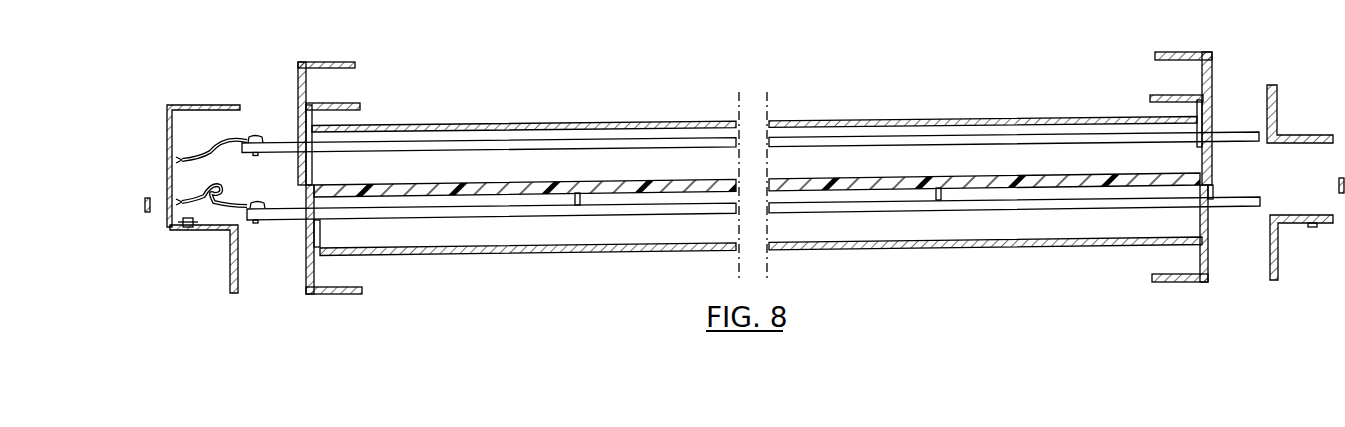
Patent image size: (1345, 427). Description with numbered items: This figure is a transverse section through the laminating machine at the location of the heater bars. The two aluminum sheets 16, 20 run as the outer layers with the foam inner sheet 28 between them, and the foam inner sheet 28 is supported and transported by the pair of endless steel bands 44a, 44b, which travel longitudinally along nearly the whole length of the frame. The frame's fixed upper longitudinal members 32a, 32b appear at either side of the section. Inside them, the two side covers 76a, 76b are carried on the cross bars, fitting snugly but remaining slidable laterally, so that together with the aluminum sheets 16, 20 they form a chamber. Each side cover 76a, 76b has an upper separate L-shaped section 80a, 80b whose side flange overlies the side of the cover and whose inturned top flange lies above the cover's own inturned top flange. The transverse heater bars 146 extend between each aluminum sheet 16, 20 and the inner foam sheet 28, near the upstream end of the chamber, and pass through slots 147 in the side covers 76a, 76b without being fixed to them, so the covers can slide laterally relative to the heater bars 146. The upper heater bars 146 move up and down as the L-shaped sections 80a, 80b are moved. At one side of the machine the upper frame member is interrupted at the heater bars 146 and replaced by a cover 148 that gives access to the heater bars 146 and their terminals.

The aluminum sheet 16 is at (523, 252).
The aluminum sheet 20 is at (468, 126).
The foam inner sheet 28 is at (512, 188).
The upper longitudinal member 32a is at (204, 259).
The upper longitudinal member 32b is at (1280, 253).
The endless steel band 44a is at (148, 213).
The endless steel band 44b is at (1339, 184).
The side cover 76a is at (290, 74).
The side cover 76b is at (1222, 69).
The L-shaped section 80a is at (330, 62).
The L-shaped section 80b is at (1179, 51).
The heater bar 146 is at (391, 146).
The slot 147 is at (311, 155).
The cover 148 is at (205, 104).